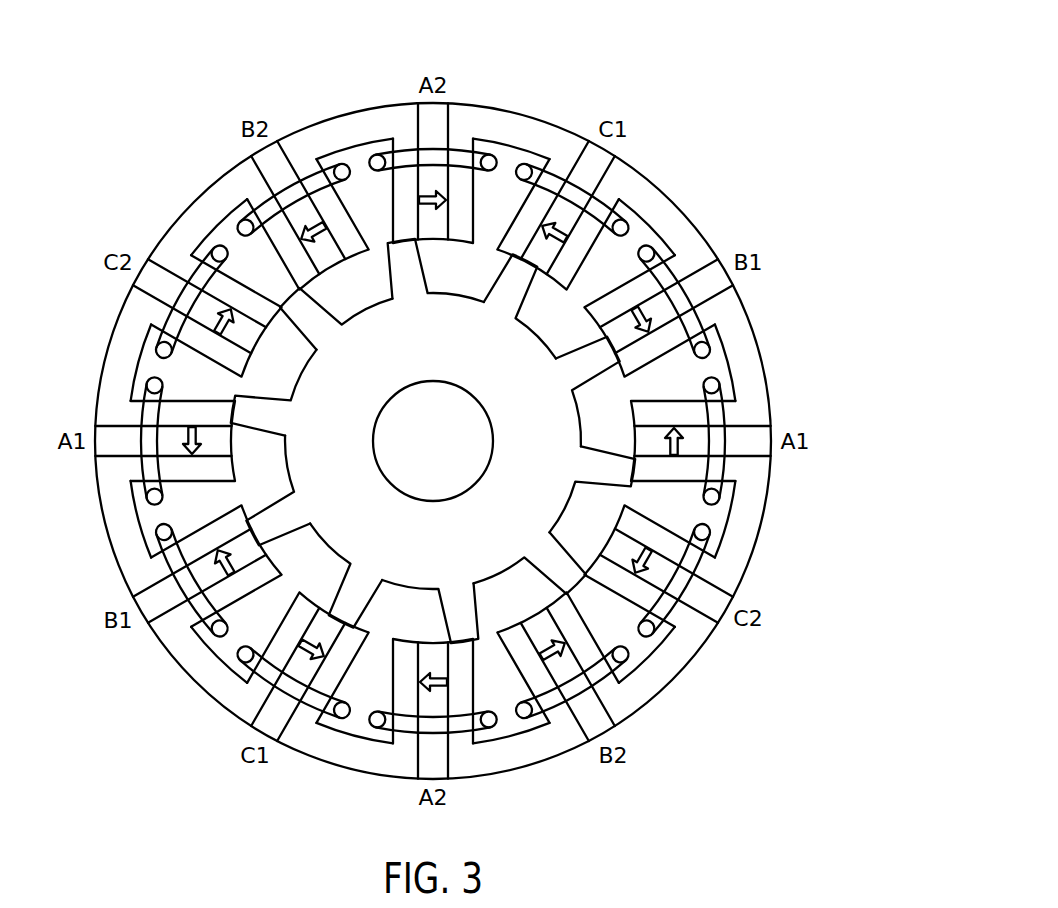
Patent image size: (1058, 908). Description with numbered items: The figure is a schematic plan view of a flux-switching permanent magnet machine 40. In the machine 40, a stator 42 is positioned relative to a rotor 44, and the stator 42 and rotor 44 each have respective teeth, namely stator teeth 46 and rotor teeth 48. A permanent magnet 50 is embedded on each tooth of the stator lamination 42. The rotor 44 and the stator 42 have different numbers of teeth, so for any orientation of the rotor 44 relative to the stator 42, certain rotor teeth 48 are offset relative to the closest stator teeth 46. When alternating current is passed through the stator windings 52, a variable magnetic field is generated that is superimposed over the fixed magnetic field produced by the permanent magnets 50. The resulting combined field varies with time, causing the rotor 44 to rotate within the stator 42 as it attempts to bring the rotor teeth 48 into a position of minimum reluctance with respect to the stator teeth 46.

The flux-switching permanent magnet machine 40 is at (684, 60).
The stator 42 is at (641, 188).
The rotor 44 is at (547, 451).
The stator teeth 46 is at (690, 473).
The rotor teeth 48 is at (447, 619).
The permanent magnet 50 is at (566, 212).
The stator windings 52 is at (283, 203).